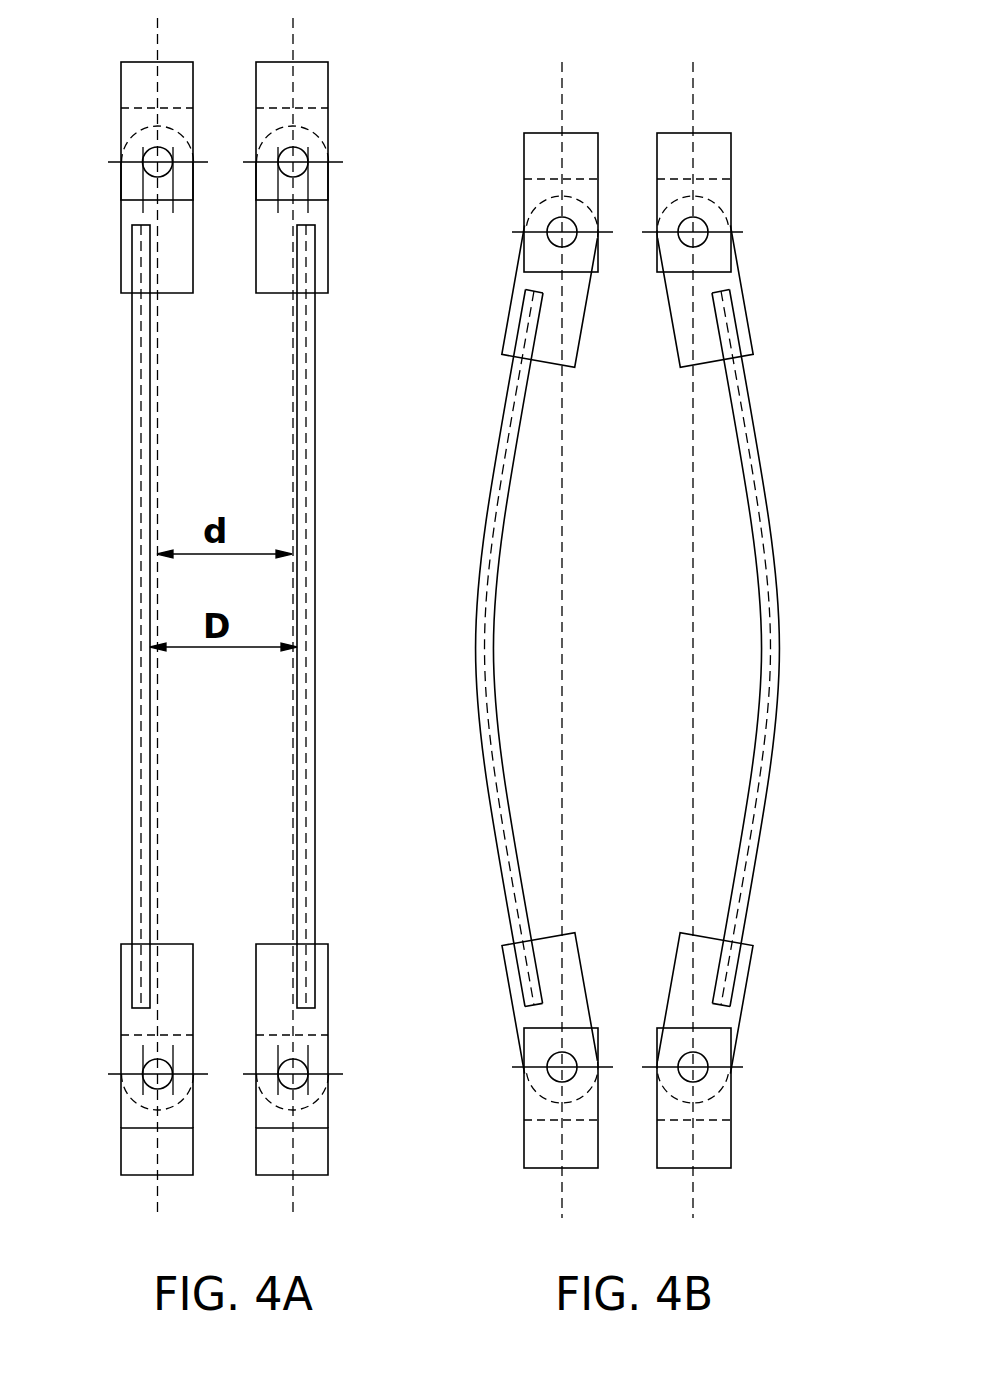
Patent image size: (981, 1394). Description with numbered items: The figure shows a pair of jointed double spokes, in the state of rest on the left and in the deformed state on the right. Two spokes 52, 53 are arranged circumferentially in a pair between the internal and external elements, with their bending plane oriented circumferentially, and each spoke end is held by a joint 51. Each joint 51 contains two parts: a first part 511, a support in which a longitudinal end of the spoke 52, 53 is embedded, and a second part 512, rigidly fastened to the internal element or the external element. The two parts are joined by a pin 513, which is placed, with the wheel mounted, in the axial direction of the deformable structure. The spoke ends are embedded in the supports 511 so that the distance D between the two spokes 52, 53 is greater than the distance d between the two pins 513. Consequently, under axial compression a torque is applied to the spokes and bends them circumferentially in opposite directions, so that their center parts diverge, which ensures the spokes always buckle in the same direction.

In FIG. 4A, the joint 51 is at (272, 607).
In FIG. 4B, the joint 51 is at (648, 640).
In FIG. 4A, the first part 511 is at (320, 238).
In FIG. 4B, the first part 511 is at (675, 263).
In FIG. 4A, the second part 512 is at (310, 85).
In FIG. 4B, the second part 512 is at (672, 167).
In FIG. 4A, the pin 513 is at (294, 166).
In FIG. 4B, the pin 513 is at (560, 230).
In FIG. 4A, the spoke 52 is at (140, 457).
In FIG. 4B, the spoke 52 is at (490, 548).
In FIG. 4A, the spoke 53 is at (307, 436).
In FIG. 4B, the spoke 53 is at (765, 557).